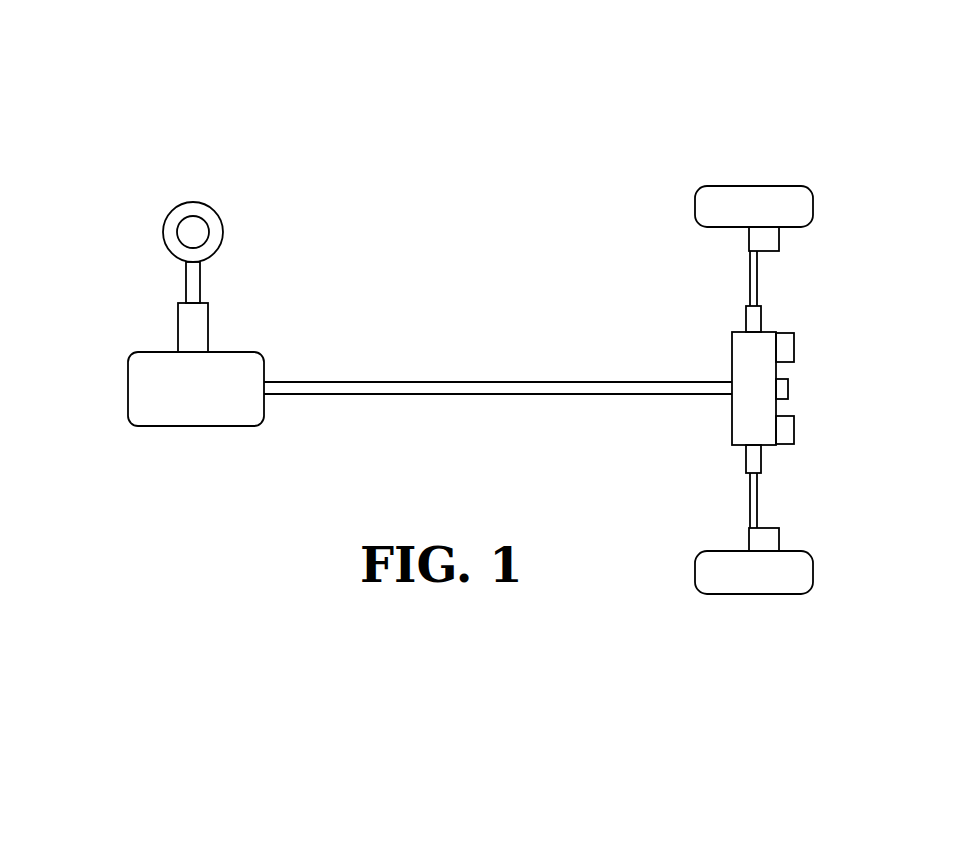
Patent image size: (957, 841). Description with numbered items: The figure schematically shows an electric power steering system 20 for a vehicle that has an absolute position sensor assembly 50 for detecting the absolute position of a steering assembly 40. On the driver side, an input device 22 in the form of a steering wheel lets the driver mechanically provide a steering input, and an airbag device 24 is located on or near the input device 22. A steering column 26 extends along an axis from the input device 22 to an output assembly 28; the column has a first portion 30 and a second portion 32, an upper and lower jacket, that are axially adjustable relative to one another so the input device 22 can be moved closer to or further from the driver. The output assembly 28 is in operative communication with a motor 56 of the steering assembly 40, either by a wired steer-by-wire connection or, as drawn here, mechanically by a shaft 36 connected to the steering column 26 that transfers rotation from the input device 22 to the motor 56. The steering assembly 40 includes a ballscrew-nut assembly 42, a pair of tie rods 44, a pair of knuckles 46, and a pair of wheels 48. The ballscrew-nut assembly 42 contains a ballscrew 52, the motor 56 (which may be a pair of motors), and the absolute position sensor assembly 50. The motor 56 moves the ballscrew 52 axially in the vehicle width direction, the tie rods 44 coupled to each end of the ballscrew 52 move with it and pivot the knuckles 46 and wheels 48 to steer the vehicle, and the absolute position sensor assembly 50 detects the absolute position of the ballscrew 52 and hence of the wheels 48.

The electric power steering system 20 is at (332, 140).
The input device 22 is at (180, 207).
The airbag device 24 is at (207, 228).
The steering column 26 is at (168, 320).
The output assembly 28 is at (200, 426).
The first portion 30 is at (200, 283).
The second portion 32 is at (208, 333).
The shaft 36 is at (380, 382).
The steering assembly 40 is at (840, 325).
The ballscrew-nut assembly 42 is at (722, 342).
The tie rods 44 is at (757, 275).
The knuckles 46 is at (749, 237).
The wheels 48 is at (753, 186).
The absolute position sensor assembly 50 is at (788, 387).
The ballscrew 52 is at (761, 318).
The motor 56 is at (794, 345).